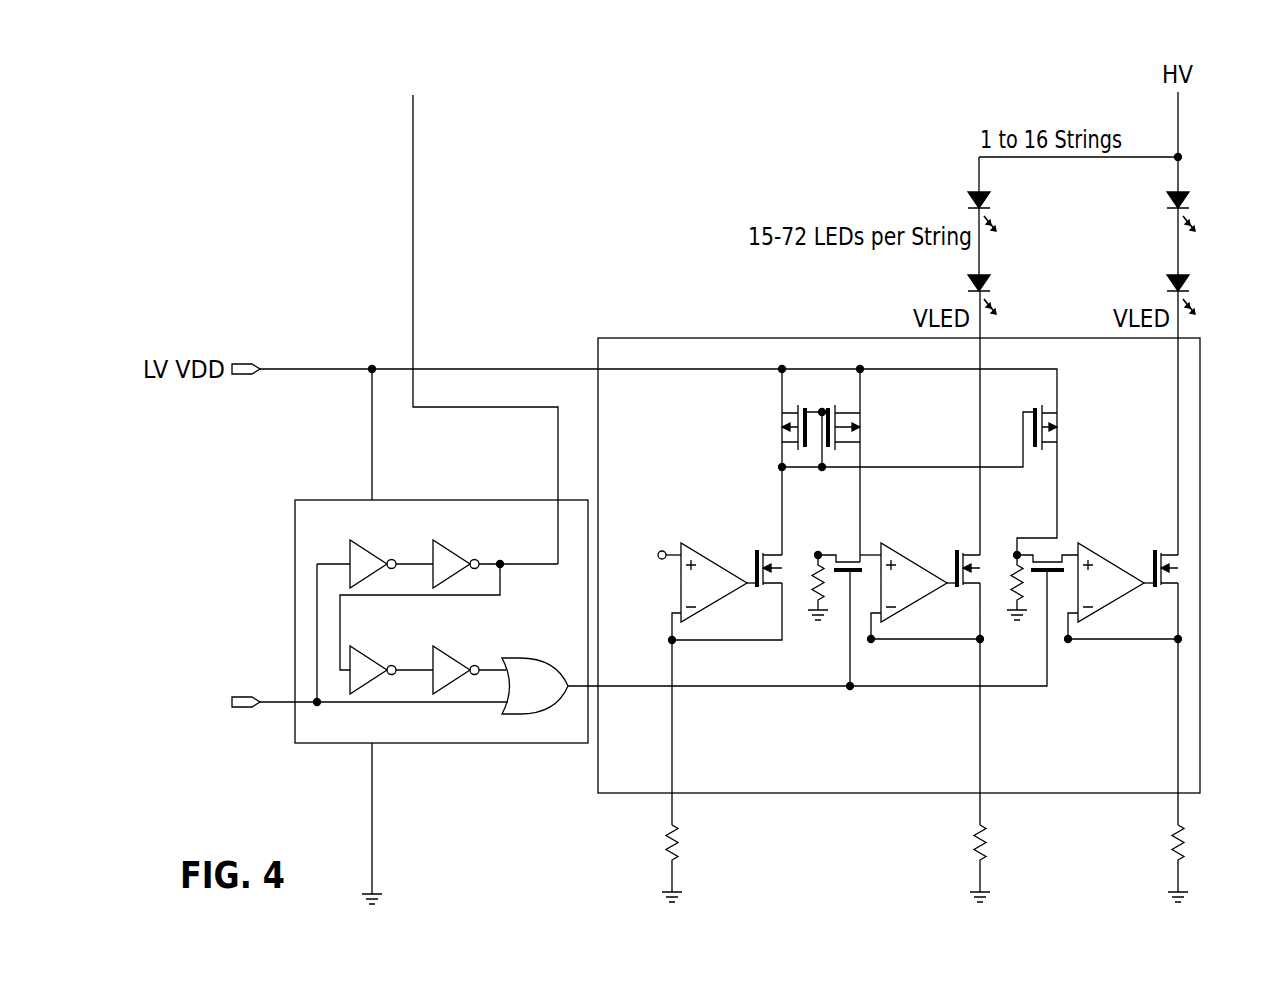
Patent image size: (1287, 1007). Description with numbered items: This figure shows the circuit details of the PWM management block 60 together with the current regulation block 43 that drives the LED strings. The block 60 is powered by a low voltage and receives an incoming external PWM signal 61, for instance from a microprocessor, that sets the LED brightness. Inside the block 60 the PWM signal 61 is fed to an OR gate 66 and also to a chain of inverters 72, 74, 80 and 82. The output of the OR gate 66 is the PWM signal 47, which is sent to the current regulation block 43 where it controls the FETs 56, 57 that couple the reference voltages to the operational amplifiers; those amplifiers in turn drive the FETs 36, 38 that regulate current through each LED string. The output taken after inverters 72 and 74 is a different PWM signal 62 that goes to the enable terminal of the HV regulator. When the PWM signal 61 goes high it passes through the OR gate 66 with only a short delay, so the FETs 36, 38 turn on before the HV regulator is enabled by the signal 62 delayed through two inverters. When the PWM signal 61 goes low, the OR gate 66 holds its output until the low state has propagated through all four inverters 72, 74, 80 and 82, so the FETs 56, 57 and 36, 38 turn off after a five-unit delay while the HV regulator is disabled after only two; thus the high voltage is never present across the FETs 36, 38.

The FET 36 is at (965, 552).
The FET 38 is at (1163, 552).
The current regulation block 43 is at (877, 337).
The PWM signal 47 is at (778, 688).
The FET 56 is at (848, 556).
The FET 57 is at (1044, 556).
The PWM management block 60 is at (443, 628).
The PWM signal 61 is at (243, 696).
The PWM signal 62 is at (413, 290).
The OR gate 66 is at (523, 658).
The inverter 72 is at (390, 541).
The inverter 74 is at (455, 549).
The inverter 80 is at (373, 651).
The inverter 82 is at (456, 651).